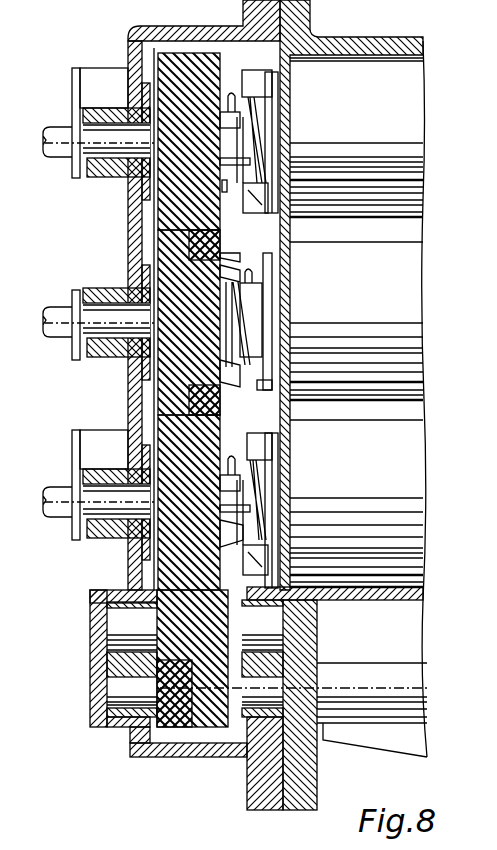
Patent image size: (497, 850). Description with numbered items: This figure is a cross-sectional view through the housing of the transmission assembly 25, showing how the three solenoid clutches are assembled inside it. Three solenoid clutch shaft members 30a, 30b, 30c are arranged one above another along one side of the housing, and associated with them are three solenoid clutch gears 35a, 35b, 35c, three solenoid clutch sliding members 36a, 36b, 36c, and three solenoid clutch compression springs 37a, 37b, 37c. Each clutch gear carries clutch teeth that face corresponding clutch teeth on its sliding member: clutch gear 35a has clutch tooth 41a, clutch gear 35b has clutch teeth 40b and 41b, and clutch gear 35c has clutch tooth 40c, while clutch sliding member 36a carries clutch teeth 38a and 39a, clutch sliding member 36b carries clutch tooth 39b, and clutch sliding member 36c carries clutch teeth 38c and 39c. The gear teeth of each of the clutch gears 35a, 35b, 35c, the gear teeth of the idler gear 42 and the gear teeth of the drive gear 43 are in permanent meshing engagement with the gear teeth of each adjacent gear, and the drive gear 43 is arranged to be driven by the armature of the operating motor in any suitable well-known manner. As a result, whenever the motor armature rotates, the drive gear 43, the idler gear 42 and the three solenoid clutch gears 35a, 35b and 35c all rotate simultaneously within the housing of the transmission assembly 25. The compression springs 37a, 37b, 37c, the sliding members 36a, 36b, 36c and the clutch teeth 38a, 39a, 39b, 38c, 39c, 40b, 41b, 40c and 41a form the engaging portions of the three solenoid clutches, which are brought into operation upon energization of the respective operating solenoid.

The transmission assembly 25 is at (328, 36).
The solenoid clutch shaft member 30a is at (133, 498).
The solenoid clutch shaft member 30b is at (133, 318).
The solenoid clutch shaft member 30c is at (137, 138).
The solenoid clutch gear 35a is at (172, 562).
The solenoid clutch gear 35b is at (172, 375).
The solenoid clutch gear 35c is at (170, 200).
The solenoid clutch sliding member 36a is at (290, 500).
The solenoid clutch sliding member 36b is at (290, 318).
The solenoid clutch sliding member 36c is at (270, 135).
The solenoid clutch compression spring 37a is at (290, 515).
The solenoid clutch compression spring 37b is at (290, 357).
The solenoid clutch compression spring 37c is at (258, 160).
The clutch tooth 38a is at (258, 452).
The clutch tooth 38c is at (258, 92).
The clutch tooth 39a is at (285, 553).
The clutch tooth 39b is at (262, 300).
The clutch tooth 39c is at (285, 222).
The clutch tooth 40b is at (232, 262).
The clutch tooth 40c is at (226, 105).
The clutch tooth 41a is at (234, 533).
The clutch tooth 41b is at (227, 385).
The idler gear 42 is at (170, 616).
The drive gear 43 is at (197, 712).